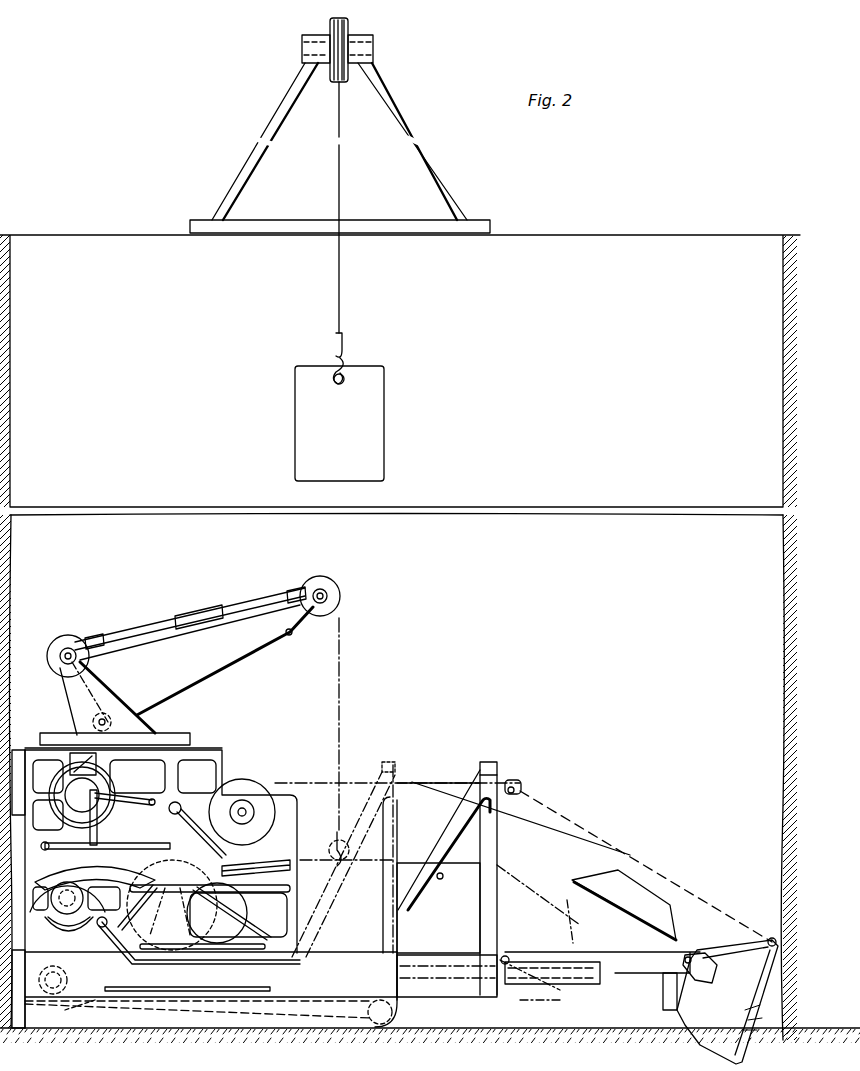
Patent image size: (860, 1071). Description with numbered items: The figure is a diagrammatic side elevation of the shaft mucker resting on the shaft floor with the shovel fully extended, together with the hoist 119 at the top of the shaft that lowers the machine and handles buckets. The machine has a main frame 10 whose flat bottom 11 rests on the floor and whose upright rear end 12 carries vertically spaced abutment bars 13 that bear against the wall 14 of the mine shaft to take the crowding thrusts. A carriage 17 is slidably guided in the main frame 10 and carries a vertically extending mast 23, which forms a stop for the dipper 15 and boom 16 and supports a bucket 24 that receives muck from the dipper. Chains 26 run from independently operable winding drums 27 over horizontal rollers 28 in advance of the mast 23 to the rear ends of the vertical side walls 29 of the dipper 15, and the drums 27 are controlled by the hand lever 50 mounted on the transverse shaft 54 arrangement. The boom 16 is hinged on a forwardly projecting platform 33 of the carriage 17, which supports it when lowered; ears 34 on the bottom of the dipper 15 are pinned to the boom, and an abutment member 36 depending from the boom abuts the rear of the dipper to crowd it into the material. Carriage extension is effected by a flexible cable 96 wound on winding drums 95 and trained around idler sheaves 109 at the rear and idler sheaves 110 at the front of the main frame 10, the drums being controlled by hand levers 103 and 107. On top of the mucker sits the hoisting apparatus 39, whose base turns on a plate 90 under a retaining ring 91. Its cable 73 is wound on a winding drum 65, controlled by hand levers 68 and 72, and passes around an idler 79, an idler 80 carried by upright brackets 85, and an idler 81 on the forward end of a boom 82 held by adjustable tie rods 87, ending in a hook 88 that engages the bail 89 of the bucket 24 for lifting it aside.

The hoist 119 is at (290, 99).
The bail 89 is at (350, 358).
The bucket 24 is at (295, 426).
The wall of the mine shaft 14 is at (12, 585).
The bottom 11 is at (226, 1032).
The idler 80 is at (76, 640).
The idler 81 is at (338, 586).
The cable 73 is at (212, 610).
The adjustable tie rods 87 is at (171, 628).
The upright brackets 85 is at (106, 685).
The boom 82 is at (262, 648).
The hoisting apparatus 39 is at (289, 636).
The idler 79 is at (95, 716).
The retaining ring 91 is at (191, 738).
The plate 90 is at (200, 748).
The main frame 10 is at (298, 808).
The abutment bars 13 is at (22, 748).
The winding drum 65 is at (122, 790).
The winding drums 27 is at (252, 779).
The hand lever 72 is at (165, 845).
The hand lever 68 is at (172, 852).
The upright rear end 12 is at (35, 876).
The winding drums 95 is at (92, 862).
The transverse shaft 54 is at (256, 861).
The hand lever 50 is at (280, 876).
The hook 88 is at (334, 852).
The hand lever 103 is at (185, 964).
The hand lever 107 is at (203, 966).
The idler sheaves 109 is at (70, 979).
The flexible cable 96 is at (112, 1002).
The idler sheaves 110 is at (368, 1015).
The mast 23 is at (498, 818).
The horizontal rollers 28 is at (525, 793).
The chains 26 is at (570, 812).
The carriage 17 is at (450, 997).
The boom 16 is at (616, 952).
The platform 33 is at (538, 986).
The abutment member 36 is at (665, 998).
The ears 34 is at (700, 952).
The dipper 15 is at (738, 930).
The vertical side walls 29 is at (768, 938).